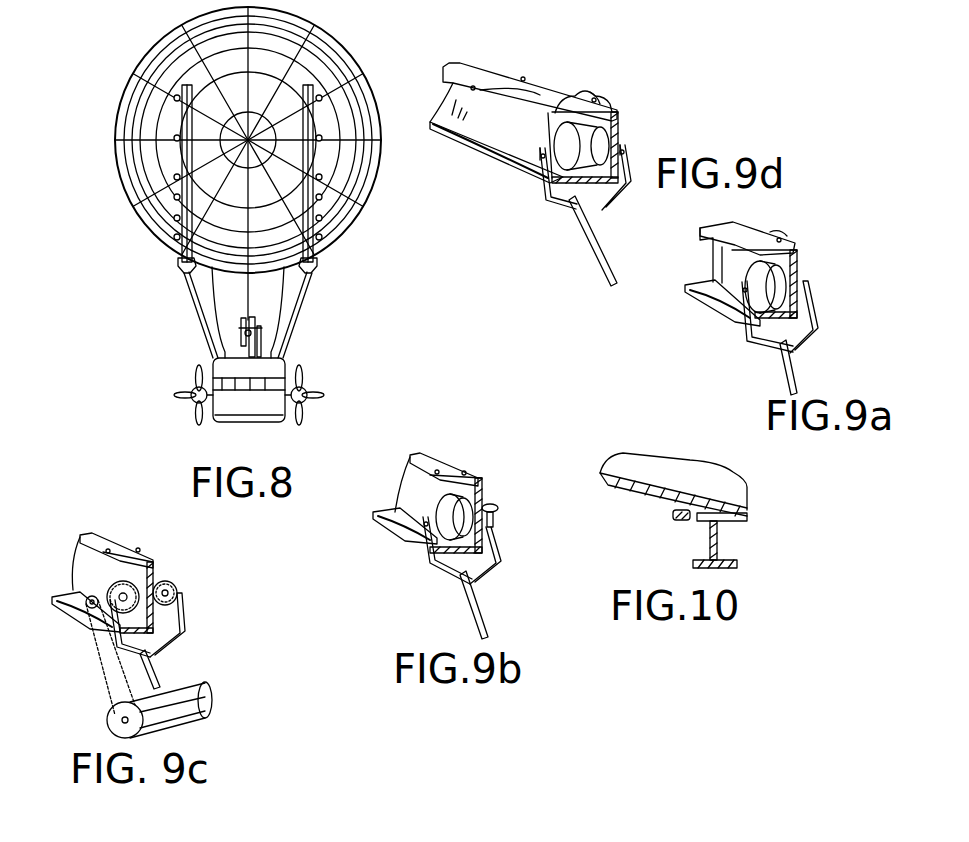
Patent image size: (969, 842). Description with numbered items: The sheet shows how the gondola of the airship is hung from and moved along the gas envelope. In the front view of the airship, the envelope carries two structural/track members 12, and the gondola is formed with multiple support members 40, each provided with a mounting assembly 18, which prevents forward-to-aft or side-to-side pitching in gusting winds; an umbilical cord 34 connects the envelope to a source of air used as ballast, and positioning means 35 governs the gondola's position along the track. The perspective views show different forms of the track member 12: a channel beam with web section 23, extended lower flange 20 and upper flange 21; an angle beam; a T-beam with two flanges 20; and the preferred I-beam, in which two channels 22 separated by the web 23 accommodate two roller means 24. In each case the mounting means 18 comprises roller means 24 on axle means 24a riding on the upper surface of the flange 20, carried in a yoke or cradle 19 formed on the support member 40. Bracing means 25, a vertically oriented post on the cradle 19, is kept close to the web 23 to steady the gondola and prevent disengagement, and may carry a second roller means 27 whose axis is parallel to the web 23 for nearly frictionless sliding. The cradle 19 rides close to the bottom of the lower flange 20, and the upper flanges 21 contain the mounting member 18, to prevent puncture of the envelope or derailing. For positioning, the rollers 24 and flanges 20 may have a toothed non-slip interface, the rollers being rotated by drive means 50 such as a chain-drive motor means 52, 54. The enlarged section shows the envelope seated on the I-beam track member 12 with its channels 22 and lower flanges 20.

In FIG. 8, the structural/track member 12 is at (182, 113).
In FIG. 9d, the structural/track member 12 is at (540, 93).
In FIG. 10, the structural/track member 12 is at (720, 552).
In FIG. 9d, the mounting means 18 is at (557, 212).
In FIG. 9a, the mounting means 18 is at (760, 355).
In FIG. 9b, the mounting means 18 is at (441, 594).
In FIG. 9c, the mounting means 18 is at (209, 638).
In FIG. 9d, the cradle 19 is at (600, 218).
In FIG. 9b, the cradle 19 is at (445, 582).
In FIG. 9c, the cradle 19 is at (167, 650).
In FIG. 9d, the lower flange 20 is at (520, 167).
In FIG. 9a, the lower flange 20 is at (708, 302).
In FIG. 9b, the lower flange 20 is at (393, 519).
In FIG. 9c, the lower flange 20 is at (63, 603).
In FIG. 10, the lower flange 20 is at (697, 563).
In FIG. 9d, the upper flange 21 is at (587, 100).
In FIG. 9a, the upper flange 21 is at (705, 239).
In FIG. 9d, the channel 22 is at (483, 122).
In FIG. 10, the channel 22 is at (701, 545).
In FIG. 9d, the web section 23 is at (600, 109).
In FIG. 9a, the web section 23 is at (795, 256).
In FIG. 9b, the web section 23 is at (474, 494).
In FIG. 9c, the web section 23 is at (153, 566).
In FIG. 9d, the roller means 24 is at (602, 124).
In FIG. 9a, the roller means 24 is at (750, 331).
In FIG. 9b, the roller means 24 is at (452, 532).
In FIG. 9c, the roller means 24 is at (117, 583).
In FIG. 9d, the axle means 24a is at (553, 183).
In FIG. 9a, the axle means 24a is at (760, 300).
In FIG. 9b, the axle means 24a is at (443, 513).
In FIG. 9a, the bracing means 25 is at (817, 309).
In FIG. 9b, the bracing means 25 is at (494, 540).
In FIG. 9b, the second roller means 27 is at (497, 512).
In FIG. 8, the umbilical cord 34 is at (211, 283).
In FIG. 8, the positioning means 35 is at (265, 326).
In FIG. 8, the support member 40 is at (200, 308).
In FIG. 9d, the support member 40 is at (593, 260).
In FIG. 9a, the support member 40 is at (807, 386).
In FIG. 9b, the support member 40 is at (487, 623).
In FIG. 9c, the support member 40 is at (150, 669).
In FIG. 9c, the drive means 50 is at (95, 707).
In FIG. 9c, the chain-drive motor means 52 is at (193, 720).
In FIG. 9c, the chain-drive motor means 54 is at (95, 641).